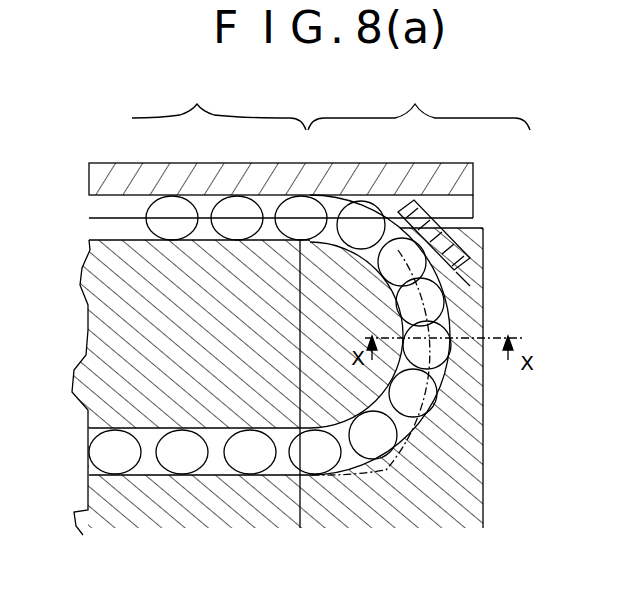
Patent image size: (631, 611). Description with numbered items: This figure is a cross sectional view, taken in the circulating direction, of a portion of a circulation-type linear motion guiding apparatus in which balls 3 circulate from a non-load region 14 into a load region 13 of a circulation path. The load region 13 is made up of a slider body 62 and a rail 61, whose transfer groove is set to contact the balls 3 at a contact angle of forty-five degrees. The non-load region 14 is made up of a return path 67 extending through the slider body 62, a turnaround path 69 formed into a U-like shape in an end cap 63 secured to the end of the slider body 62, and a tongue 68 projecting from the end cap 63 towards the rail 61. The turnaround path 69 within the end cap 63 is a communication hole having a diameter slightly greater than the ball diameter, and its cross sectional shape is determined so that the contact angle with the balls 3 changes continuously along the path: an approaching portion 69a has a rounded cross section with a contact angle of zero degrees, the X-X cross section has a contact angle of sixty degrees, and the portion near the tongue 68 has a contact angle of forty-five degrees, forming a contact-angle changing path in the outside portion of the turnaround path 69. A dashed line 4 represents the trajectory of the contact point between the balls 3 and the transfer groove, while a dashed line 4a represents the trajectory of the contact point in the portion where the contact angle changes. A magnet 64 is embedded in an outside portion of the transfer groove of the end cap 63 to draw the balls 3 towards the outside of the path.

The balls 3 is at (483, 242).
The dashed line 4 is at (132, 203).
The dashed line 4a is at (455, 283).
The load region 13 is at (219, 108).
The non-load region 14 is at (419, 109).
The rail 61 is at (213, 182).
The slider body 62 is at (203, 495).
The end cap 63 is at (483, 397).
The magnet 64 is at (470, 265).
The return path 67 is at (255, 476).
The tongue 68 is at (417, 198).
The turnaround path 69 is at (427, 415).
The approaching portion 69a is at (333, 473).